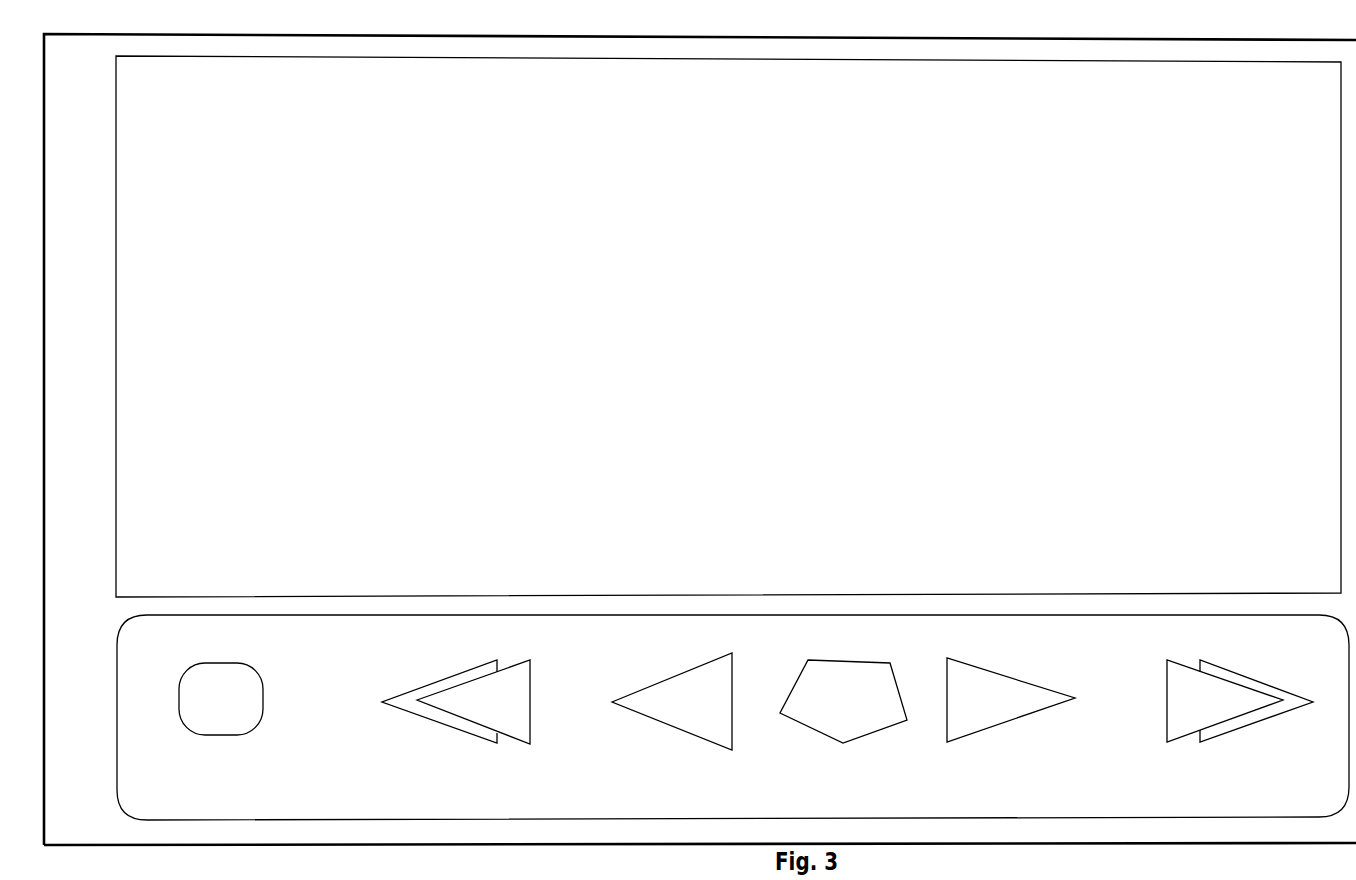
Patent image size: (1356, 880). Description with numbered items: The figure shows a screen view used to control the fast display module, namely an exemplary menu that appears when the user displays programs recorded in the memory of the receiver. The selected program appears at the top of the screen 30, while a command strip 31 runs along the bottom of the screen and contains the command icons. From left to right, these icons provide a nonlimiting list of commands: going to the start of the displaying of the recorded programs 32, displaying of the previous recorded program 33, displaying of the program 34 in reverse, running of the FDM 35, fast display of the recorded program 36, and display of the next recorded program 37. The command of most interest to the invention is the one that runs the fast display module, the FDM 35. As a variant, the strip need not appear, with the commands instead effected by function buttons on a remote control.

The screen 30 is at (728, 326).
The command strip 31 is at (112, 653).
The go to the start command 32 is at (262, 682).
The previous recorded program command 33 is at (457, 672).
The reverse display command 34 is at (658, 682).
The FDM command 35 is at (792, 692).
The fast display command 36 is at (1022, 682).
The next recorded program command 37 is at (1235, 672).